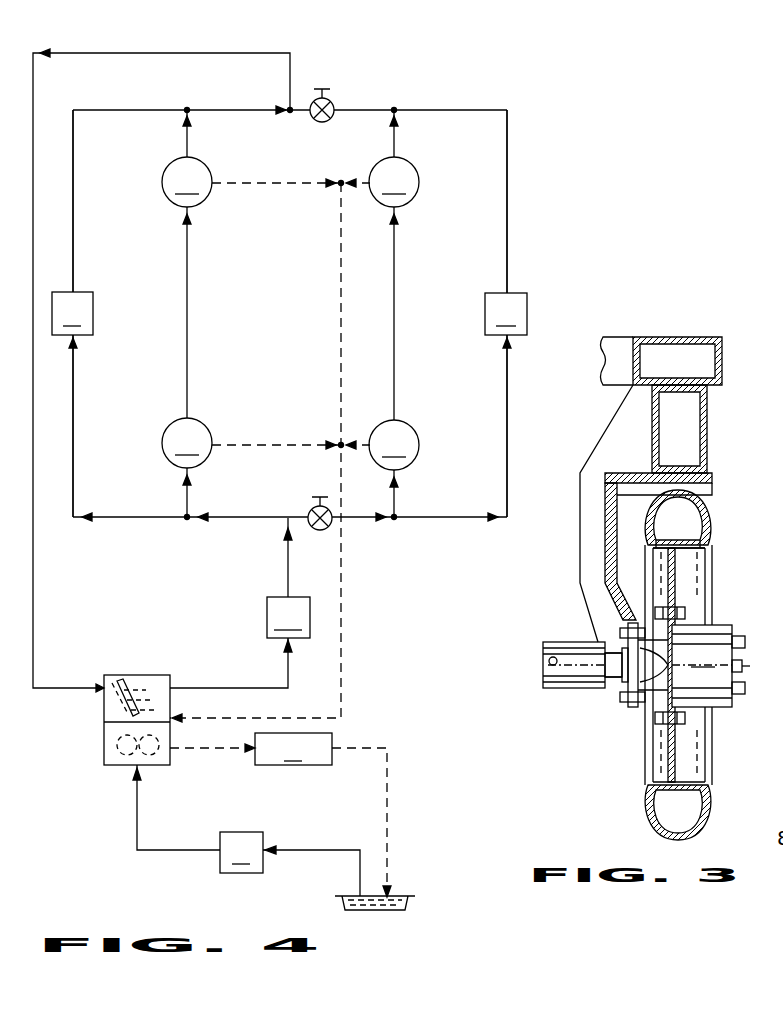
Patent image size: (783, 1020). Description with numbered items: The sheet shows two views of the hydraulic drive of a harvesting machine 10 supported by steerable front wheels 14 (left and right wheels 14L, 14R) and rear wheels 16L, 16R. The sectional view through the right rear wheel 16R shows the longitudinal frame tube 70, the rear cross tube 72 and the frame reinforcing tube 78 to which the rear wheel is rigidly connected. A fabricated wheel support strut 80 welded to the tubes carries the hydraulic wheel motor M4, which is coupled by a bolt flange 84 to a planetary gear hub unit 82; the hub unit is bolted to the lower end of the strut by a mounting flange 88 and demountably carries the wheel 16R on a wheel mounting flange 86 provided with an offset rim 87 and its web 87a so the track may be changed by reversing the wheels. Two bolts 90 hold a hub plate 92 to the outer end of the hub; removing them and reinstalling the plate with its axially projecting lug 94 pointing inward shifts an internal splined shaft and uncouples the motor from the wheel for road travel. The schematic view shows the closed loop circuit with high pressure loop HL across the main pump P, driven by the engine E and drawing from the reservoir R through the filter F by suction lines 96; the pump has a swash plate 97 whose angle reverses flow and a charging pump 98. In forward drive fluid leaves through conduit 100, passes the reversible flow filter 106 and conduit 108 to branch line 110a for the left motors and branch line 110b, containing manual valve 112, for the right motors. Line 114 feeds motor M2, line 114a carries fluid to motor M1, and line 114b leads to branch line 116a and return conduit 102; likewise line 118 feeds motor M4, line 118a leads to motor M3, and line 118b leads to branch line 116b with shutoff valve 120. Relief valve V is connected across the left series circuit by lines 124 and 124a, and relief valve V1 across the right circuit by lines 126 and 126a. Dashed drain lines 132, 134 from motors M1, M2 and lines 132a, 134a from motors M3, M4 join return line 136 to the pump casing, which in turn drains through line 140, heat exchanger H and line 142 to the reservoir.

In FIG. 3, the harvesting machine 10 is at (782, 88).
In FIG. 3, the front wheels 14 is at (775, 118).
In FIG. 3, the right rear wheel 16R is at (645, 818).
In FIG. 4, the right rear wheel 16R is at (450, 445).
In FIG. 4, the left rear wheel 16L is at (124, 443).
In FIG. 4, the left front wheel 14L is at (124, 182).
In FIG. 4, the right front wheel 14R is at (450, 182).
In FIG. 3, the longitudinal frame tubes 70 is at (693, 337).
In FIG. 3, the rear cross tube 72 is at (607, 337).
In FIG. 3, the frame reinforcing tubes 78 is at (708, 415).
In FIG. 3, the wheel support strut 80 is at (612, 578).
In FIG. 3, the gear hub unit 82 is at (727, 424).
In FIG. 3, the bolt flange 84 is at (625, 645).
In FIG. 3, the wheel mounting flange 86 is at (663, 728).
In FIG. 3, the offset rim 87 is at (680, 547).
In FIG. 3, the rim web 87a is at (676, 585).
In FIG. 3, the mounting flange 88 is at (636, 708).
In FIG. 3, the bolts 90 is at (740, 636).
In FIG. 3, the hub plate 92 is at (740, 673).
In FIG. 3, the lug 94 is at (742, 667).
In FIG. 3, the engine E is at (782, 292).
In FIG. 4, the hydraulic motor M1 is at (187, 182).
In FIG. 4, the hydraulic motor M2 is at (187, 443).
In FIG. 4, the hydraulic motor M3 is at (394, 182).
In FIG. 3, the hydraulic motor M4 is at (560, 688).
In FIG. 4, the hydraulic motor M4 is at (394, 445).
In FIG. 4, the two-way relief valve V is at (72, 313).
In FIG. 4, the two-way relief valve V1 is at (506, 314).
In FIG. 4, the main hydraulic pump P is at (104, 720).
In FIG. 4, the heat exchanger H is at (293, 749).
In FIG. 4, the filter F is at (241, 852).
In FIG. 4, the reservoir R is at (416, 904).
In FIG. 4, the high pressure loop HL is at (428, 104).
In FIG. 4, the suction lines 96 is at (135, 807).
In FIG. 4, the swash plate 97 is at (104, 703).
In FIG. 4, the charging pump 98 is at (104, 750).
In FIG. 4, the conduit 100 is at (218, 687).
In FIG. 4, the conduit 102 is at (284, 53).
In FIG. 4, the filter 106 is at (288, 617).
In FIG. 4, the conduit 108 is at (286, 560).
In FIG. 4, the branch line 110a is at (230, 520).
In FIG. 4, the branch line 110b is at (358, 522).
In FIG. 4, the manually operable valve 112 is at (311, 510).
In FIG. 4, the line 114 is at (185, 490).
In FIG. 4, the line 114a is at (189, 310).
In FIG. 4, the line 114b is at (190, 135).
In FIG. 4, the branch line 116a is at (216, 108).
In FIG. 4, the branch line 116b is at (357, 108).
In FIG. 4, the line 118 is at (396, 497).
In FIG. 4, the line 118a is at (396, 310).
In FIG. 4, the line 118b is at (396, 138).
In FIG. 4, the manual shutoff valve 120 is at (331, 120).
In FIG. 4, the line 124 is at (75, 398).
In FIG. 4, the line 124a is at (75, 237).
In FIG. 4, the line 126 is at (508, 373).
In FIG. 4, the line 126a is at (508, 140).
In FIG. 4, the leakage drain line 132 is at (236, 183).
In FIG. 4, the leakage drain line 132a is at (364, 180).
In FIG. 4, the leakage drain line 134 is at (258, 446).
In FIG. 4, the leakage drain line 134a is at (368, 462).
In FIG. 4, the return line 136 is at (339, 288).
In FIG. 4, the line 140 is at (200, 752).
In FIG. 4, the line 142 is at (388, 778).